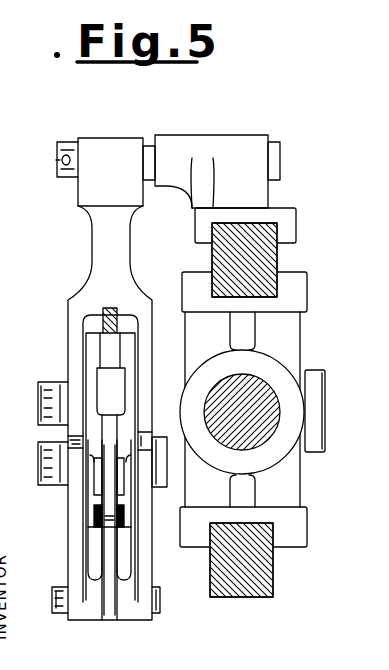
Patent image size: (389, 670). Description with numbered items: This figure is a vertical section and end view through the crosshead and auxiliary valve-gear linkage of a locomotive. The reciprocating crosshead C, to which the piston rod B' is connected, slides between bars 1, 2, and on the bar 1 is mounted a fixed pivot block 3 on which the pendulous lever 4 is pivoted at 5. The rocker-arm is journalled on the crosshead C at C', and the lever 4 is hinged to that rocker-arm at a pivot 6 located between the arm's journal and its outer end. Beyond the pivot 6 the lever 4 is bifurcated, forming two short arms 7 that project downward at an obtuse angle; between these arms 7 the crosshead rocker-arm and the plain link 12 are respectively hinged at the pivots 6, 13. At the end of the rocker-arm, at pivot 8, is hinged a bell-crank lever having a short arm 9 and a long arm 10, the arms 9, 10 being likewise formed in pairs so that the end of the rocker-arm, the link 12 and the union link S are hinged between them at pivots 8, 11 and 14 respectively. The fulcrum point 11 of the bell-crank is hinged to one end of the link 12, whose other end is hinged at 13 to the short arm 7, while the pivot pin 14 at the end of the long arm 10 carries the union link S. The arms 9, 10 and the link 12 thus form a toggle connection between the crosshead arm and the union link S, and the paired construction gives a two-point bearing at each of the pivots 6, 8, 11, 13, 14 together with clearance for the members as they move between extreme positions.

The bar 1 is at (270, 255).
The bar 2 is at (275, 575).
The fixed pivot block 3 is at (268, 195).
The pendulous lever 4 is at (92, 242).
The pivot 5 is at (57, 160).
The pivot 6 is at (38, 465).
The short arm 7 is at (74, 549).
The pivot 8 is at (86, 514).
The short arm 9 is at (90, 494).
The long arm 10 is at (130, 392).
The fulcrum point 11 is at (76, 446).
The plain link 12 is at (108, 597).
The pivot 13 is at (52, 600).
The pivot pin 14 is at (90, 348).
The union link S is at (112, 306).
The crosshead C is at (257, 377).
The rocker-arm journal C' is at (34, 403).
The piston rod B' is at (275, 412).